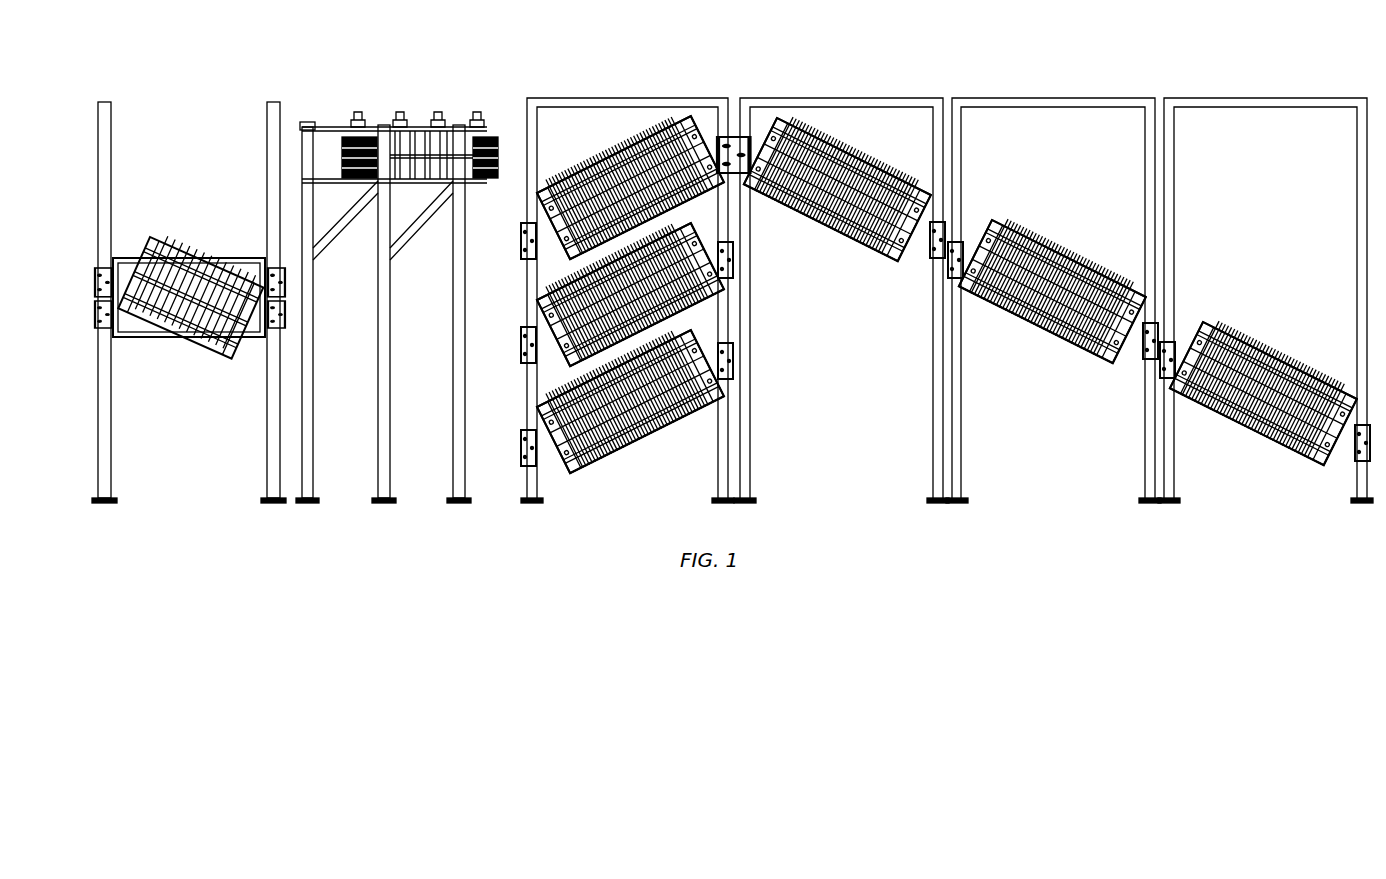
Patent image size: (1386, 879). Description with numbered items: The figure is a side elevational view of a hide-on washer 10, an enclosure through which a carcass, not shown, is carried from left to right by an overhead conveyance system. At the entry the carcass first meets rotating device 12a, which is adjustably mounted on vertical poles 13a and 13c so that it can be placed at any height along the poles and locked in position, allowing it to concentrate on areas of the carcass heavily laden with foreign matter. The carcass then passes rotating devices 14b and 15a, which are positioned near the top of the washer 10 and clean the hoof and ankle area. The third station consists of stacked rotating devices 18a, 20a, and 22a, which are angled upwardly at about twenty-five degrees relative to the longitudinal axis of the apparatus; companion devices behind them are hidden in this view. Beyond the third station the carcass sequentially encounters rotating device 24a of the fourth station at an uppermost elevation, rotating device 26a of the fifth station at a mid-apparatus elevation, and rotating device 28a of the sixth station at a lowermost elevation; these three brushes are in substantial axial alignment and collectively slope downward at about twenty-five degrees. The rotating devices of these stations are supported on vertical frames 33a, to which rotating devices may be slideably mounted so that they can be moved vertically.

The hide-on washer 10 is at (1238, 60).
The rotating device 12a is at (202, 222).
The vertical pole 13a is at (111, 174).
The vertical pole 13c is at (267, 158).
The rotating device 14b is at (347, 136).
The rotating device 15a is at (498, 141).
The rotating device 18a is at (610, 134).
The rotating device 20a is at (537, 268).
The rotating device 22a is at (627, 486).
The rotating device 24a is at (855, 134).
The rotating device 26a is at (1060, 233).
The rotating device 28a is at (1252, 325).
The vertical frame 33a is at (537, 500).